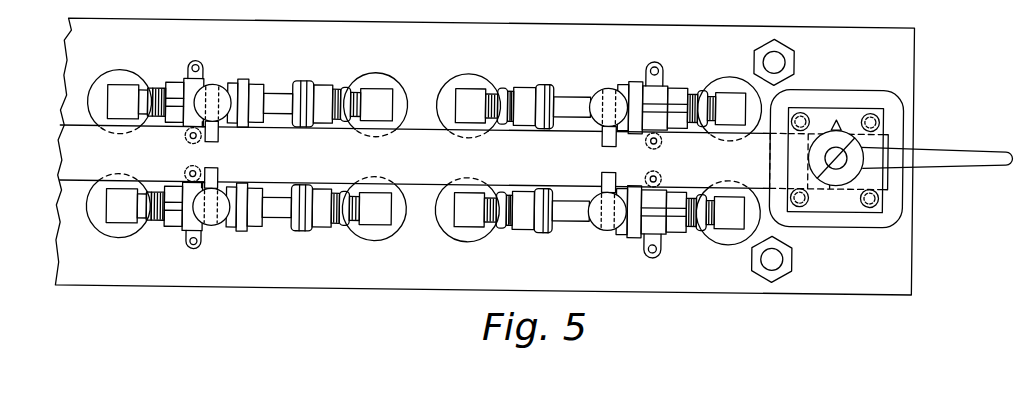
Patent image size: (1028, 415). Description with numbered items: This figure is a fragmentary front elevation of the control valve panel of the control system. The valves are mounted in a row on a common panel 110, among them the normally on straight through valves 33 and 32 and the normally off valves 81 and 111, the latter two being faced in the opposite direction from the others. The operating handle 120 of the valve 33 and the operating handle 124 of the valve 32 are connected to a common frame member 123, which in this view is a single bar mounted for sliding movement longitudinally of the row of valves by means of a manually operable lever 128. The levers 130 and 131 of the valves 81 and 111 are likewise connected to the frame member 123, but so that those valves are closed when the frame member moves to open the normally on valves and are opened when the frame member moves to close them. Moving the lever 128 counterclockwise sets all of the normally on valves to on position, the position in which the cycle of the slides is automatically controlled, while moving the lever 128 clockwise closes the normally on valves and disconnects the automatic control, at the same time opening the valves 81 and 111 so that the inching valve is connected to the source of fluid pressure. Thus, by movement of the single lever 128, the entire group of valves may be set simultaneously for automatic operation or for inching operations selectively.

The panel 110 is at (66, 32).
The frame member 123 is at (70, 143).
The straight through valve 33 is at (193, 81).
The straight through valve 32 is at (177, 216).
The operating handle 120 is at (220, 95).
The operating handle 124 is at (223, 201).
The lever 130 is at (593, 87).
The lever 131 is at (593, 191).
The through valve 81 is at (617, 75).
The valve 111 is at (672, 216).
The lever 128 is at (948, 145).